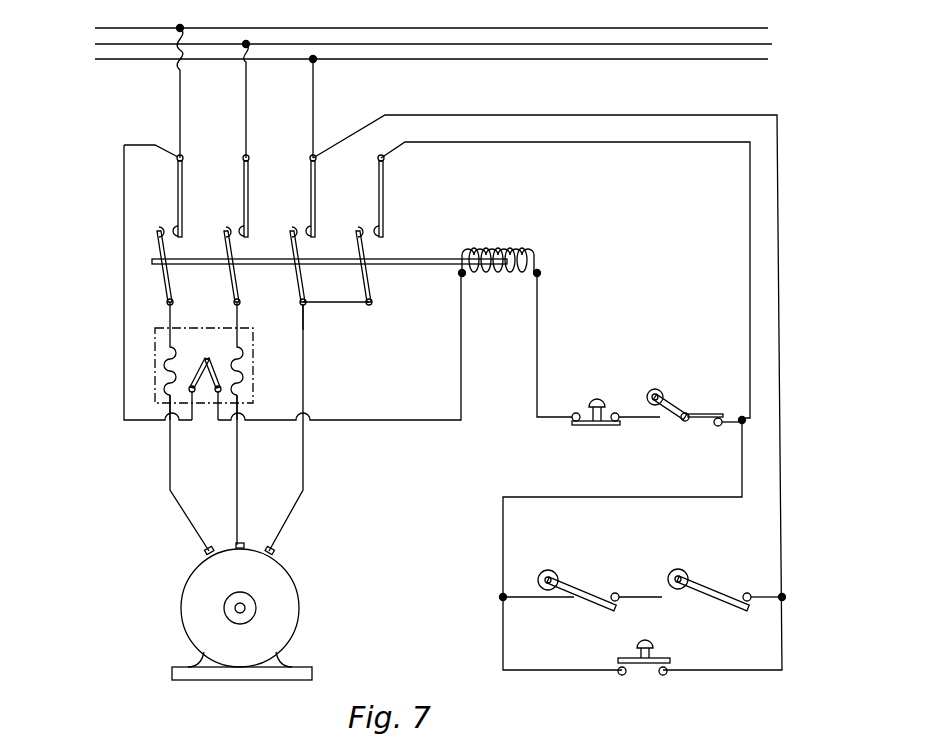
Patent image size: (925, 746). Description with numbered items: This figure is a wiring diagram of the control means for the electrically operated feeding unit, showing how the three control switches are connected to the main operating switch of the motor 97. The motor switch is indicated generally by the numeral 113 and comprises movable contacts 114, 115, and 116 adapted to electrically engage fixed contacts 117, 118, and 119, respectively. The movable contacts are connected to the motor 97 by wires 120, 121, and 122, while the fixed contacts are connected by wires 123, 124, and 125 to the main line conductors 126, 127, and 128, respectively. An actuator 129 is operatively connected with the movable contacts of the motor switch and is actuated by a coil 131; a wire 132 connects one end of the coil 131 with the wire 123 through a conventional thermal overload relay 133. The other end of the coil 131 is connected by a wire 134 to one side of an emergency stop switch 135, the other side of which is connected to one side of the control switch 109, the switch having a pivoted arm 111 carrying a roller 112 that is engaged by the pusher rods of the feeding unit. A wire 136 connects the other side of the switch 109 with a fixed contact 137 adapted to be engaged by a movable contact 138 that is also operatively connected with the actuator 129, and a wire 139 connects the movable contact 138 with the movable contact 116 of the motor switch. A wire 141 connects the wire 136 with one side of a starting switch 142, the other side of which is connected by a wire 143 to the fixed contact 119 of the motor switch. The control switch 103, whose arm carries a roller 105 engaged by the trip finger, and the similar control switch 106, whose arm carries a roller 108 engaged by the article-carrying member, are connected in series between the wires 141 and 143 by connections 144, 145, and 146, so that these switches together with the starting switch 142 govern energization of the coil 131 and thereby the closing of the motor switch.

The motor 97 is at (198, 582).
The switch 103 is at (591, 600).
The roller 105 is at (547, 570).
The switch 106 is at (724, 597).
The roller 108 is at (679, 569).
The switch 109 is at (693, 413).
The pivoted arm 111 is at (668, 404).
The roller 112 is at (655, 389).
The motor switch 113 is at (335, 326).
The movable contact 114 is at (200, 289).
The movable contact 115 is at (239, 289).
The movable contact 116 is at (305, 289).
The fixed contact 117 is at (177, 200).
The fixed contact 118 is at (243, 207).
The fixed contact 119 is at (310, 204).
The wire 120 is at (170, 478).
The wire 121 is at (237, 488).
The wire 122 is at (303, 488).
The wire 123 is at (182, 124).
The wire 124 is at (247, 116).
The wire 125 is at (315, 113).
The main line conductor 126 is at (420, 24).
The main line conductor 127 is at (490, 44).
The main line conductor 128 is at (568, 60).
The actuator 129 is at (413, 258).
The coil 131 is at (505, 247).
The wire 132 is at (408, 422).
The thermal overload relay 133 is at (201, 338).
The wire 134 is at (539, 325).
The emergency stop switch 135 is at (592, 425).
The wire 136 is at (673, 143).
The fixed contact 137 is at (384, 195).
The movable contact 138 is at (371, 290).
The wire 139 is at (348, 304).
The wire 141 is at (651, 497).
The starting switch 142 is at (664, 657).
The wire 143 is at (403, 116).
The connection 144 is at (530, 600).
The connection 145 is at (655, 602).
The connection 146 is at (763, 600).